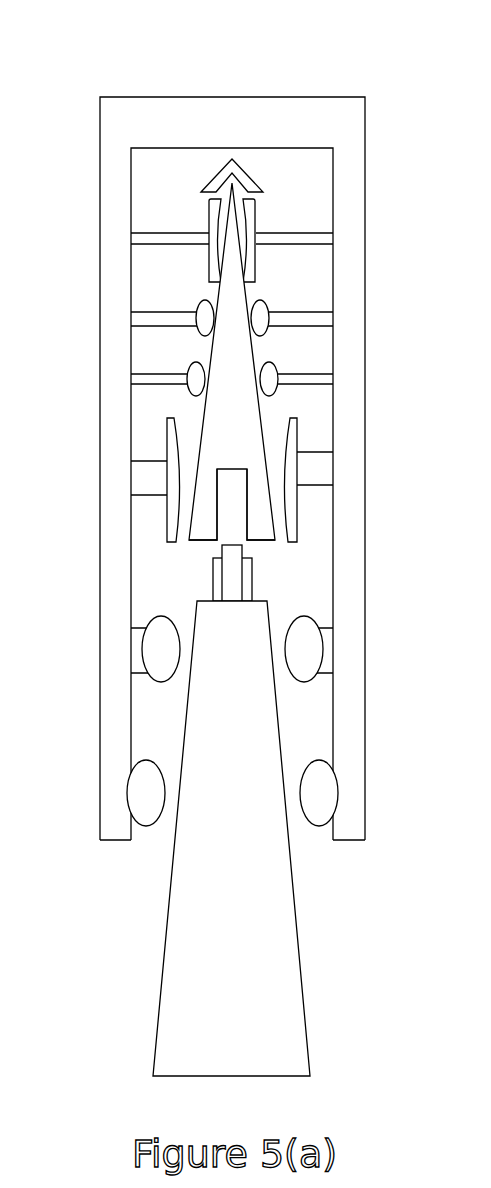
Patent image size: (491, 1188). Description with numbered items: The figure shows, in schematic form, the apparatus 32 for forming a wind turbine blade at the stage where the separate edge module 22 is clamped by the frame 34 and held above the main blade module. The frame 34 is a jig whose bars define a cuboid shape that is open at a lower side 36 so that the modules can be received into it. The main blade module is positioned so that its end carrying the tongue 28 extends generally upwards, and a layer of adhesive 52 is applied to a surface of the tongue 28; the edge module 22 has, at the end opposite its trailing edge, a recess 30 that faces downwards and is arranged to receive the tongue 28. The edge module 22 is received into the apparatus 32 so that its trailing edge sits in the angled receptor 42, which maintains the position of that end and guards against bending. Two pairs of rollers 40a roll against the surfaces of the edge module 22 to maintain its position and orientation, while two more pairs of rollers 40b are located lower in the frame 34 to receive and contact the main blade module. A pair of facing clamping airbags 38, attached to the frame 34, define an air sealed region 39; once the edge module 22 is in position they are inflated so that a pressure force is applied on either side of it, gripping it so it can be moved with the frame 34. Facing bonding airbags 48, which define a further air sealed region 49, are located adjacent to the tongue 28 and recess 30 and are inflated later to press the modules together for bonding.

The separate edge module 22 is at (217, 292).
The tongue 28 is at (243, 553).
The recess 30 is at (223, 523).
The apparatus 32 is at (394, 197).
The frame 34 is at (142, 97).
The lower side 36 is at (152, 838).
The clamping airbags 38 is at (149, 213).
The air sealed region 39 is at (219, 225).
The rollers 40a is at (203, 300).
The rollers 40b is at (162, 617).
The angled receptor 42 is at (238, 163).
The bonding airbags 48 is at (162, 460).
The air sealed region 49 is at (174, 477).
The layer of adhesive 52 is at (213, 578).